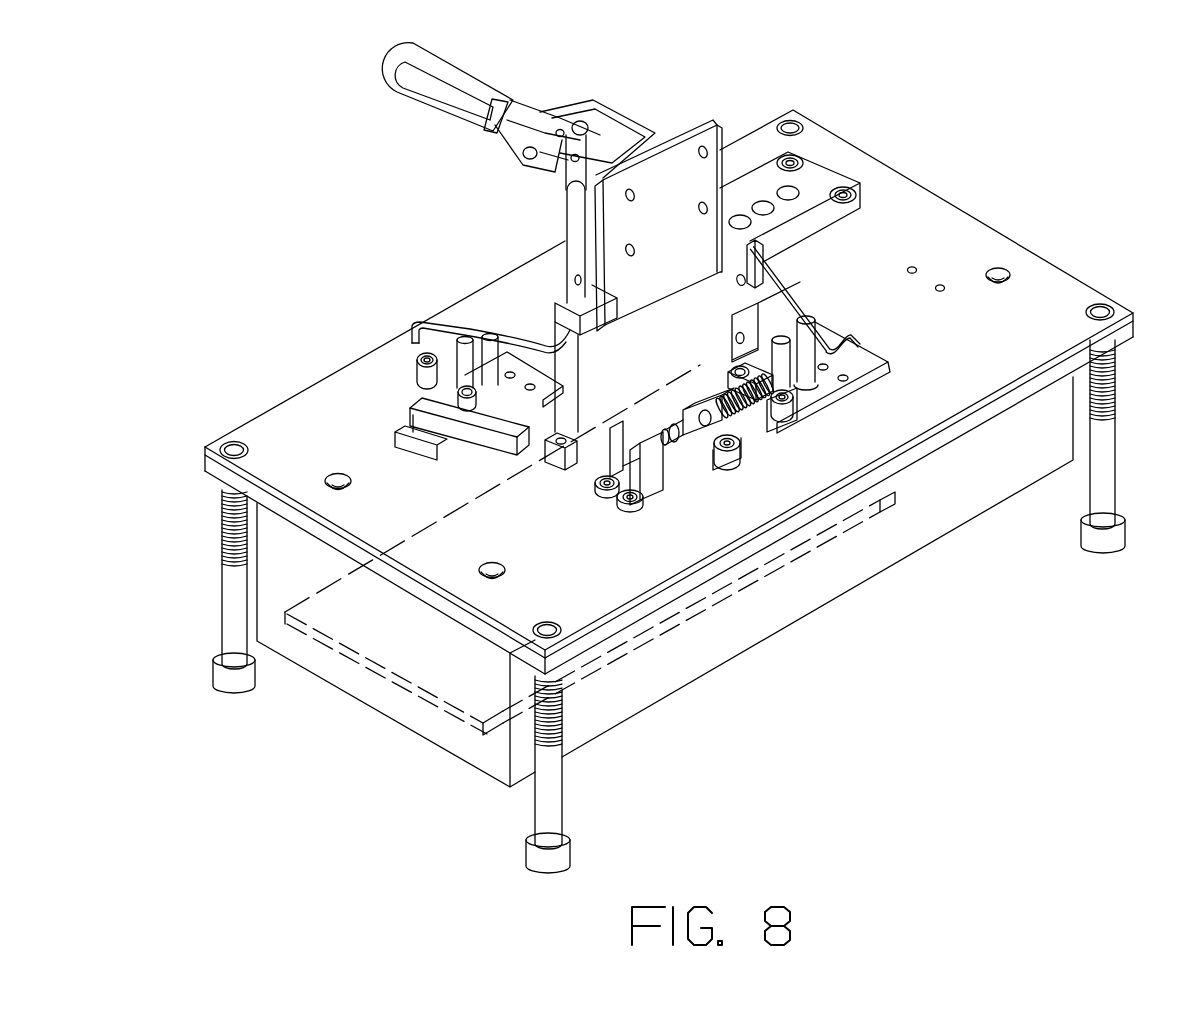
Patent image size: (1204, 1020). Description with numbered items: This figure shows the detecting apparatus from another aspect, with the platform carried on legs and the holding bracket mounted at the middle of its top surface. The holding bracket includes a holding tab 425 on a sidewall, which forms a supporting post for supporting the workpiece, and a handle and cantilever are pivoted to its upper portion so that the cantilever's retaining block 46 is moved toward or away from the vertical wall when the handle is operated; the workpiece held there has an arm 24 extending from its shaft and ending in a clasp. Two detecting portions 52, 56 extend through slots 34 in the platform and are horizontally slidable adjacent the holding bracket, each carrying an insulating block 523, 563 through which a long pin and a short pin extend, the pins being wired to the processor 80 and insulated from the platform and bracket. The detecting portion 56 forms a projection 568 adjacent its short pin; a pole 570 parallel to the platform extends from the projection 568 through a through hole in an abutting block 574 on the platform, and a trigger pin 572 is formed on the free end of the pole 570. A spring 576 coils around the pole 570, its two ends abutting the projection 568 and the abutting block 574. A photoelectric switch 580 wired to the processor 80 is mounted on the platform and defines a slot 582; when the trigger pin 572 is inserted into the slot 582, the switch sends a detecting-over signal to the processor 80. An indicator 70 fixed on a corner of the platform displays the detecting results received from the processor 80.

The arm 24 is at (770, 302).
The slot 34 is at (880, 370).
The retaining block 46 is at (556, 303).
The detecting portion 52 is at (437, 432).
The detecting portion 56 is at (825, 387).
The indicator 70 is at (813, 185).
The processor 80 is at (397, 658).
The holding tab 425 is at (546, 333).
The insulating block 523 is at (400, 422).
The insulating block 563 is at (750, 427).
The projection 568 is at (797, 390).
The pole 570 is at (690, 427).
The trigger pin 572 is at (671, 437).
The abutting block 574 is at (697, 398).
The spring 576 is at (715, 395).
The photoelectric switch 580 is at (662, 482).
The slot 582 is at (575, 478).